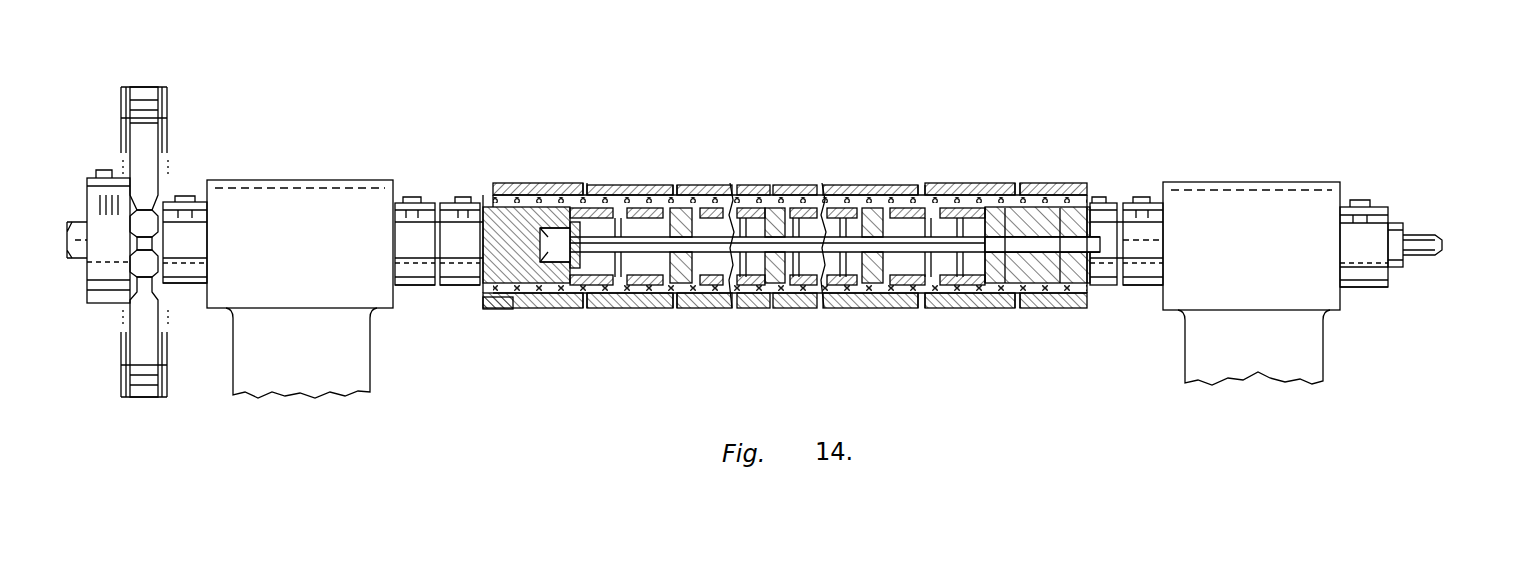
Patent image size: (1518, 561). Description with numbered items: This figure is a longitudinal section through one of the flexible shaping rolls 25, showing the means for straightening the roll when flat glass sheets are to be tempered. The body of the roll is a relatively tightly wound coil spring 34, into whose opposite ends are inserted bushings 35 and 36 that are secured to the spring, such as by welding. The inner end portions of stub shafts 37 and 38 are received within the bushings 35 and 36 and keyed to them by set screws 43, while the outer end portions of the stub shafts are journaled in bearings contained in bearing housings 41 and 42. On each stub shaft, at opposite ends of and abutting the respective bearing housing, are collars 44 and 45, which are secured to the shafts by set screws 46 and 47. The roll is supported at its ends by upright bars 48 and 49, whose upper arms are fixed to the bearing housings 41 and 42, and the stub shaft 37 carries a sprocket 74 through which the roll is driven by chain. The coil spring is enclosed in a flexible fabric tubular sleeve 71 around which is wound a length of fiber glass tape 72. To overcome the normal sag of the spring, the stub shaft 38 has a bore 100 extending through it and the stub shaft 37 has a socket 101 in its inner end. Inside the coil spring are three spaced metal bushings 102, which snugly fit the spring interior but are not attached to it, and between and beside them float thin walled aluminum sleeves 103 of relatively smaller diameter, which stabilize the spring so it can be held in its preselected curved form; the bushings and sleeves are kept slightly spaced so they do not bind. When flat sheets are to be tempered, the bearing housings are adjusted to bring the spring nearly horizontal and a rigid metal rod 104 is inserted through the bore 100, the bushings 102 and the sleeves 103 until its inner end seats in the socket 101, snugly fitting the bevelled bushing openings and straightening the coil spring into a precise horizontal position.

The flexible shaping roll 25 is at (732, 177).
The coil spring 34 is at (883, 190).
The bushing 35 is at (467, 287).
The bushing 36 is at (1023, 272).
The stub shaft 37 is at (80, 218).
The stub shaft 38 is at (1063, 270).
The bearing housing 41 is at (282, 212).
The bearing housing 42 is at (1233, 212).
The set screw 43 is at (462, 196).
The collar 44 is at (195, 285).
The collar 45 is at (420, 275).
The set screw 46 is at (183, 196).
The set screw 47 is at (412, 196).
The upright bar 48 is at (343, 345).
The upright bar 49 is at (1205, 347).
The flexible tubular sleeve 71 is at (640, 185).
The fiber glass tape 72 is at (815, 185).
The sprocket 74 is at (142, 85).
The bore 100 is at (1030, 225).
The socket 101 is at (548, 228).
The bushing 102 is at (873, 270).
The sleeve 103 is at (693, 182).
The rigid rod 104 is at (900, 247).